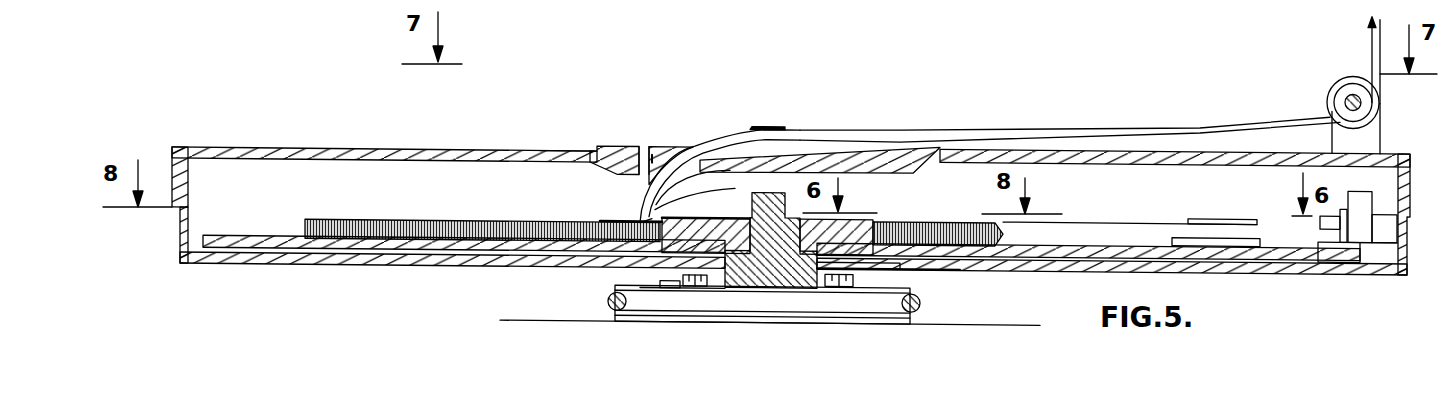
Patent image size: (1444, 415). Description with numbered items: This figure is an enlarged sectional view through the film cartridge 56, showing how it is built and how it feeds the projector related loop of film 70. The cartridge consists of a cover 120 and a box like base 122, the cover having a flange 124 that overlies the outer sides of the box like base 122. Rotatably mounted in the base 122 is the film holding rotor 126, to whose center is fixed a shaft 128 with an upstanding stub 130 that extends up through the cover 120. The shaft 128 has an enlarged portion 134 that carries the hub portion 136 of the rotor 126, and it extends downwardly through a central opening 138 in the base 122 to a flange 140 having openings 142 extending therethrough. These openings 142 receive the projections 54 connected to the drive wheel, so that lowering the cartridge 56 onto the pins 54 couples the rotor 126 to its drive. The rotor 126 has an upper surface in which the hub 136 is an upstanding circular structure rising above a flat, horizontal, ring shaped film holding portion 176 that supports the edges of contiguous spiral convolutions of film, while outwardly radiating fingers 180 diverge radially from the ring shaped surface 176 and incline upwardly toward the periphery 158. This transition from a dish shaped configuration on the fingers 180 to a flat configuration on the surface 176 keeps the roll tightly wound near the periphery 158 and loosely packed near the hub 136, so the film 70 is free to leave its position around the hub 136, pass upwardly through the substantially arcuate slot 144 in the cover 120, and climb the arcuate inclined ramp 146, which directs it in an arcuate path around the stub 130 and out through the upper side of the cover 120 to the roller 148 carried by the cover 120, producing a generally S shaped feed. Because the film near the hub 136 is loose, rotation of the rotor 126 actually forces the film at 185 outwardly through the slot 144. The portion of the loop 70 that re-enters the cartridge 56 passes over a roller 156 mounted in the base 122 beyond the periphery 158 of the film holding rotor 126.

The projections 54 is at (695, 288).
The film cartridge 56 is at (563, 147).
The projector related loop of film 70 is at (1120, 130).
The cover 120 is at (369, 147).
The box like base 122 is at (180, 235).
The flange 124 is at (172, 165).
The film holding rotor 126 is at (285, 237).
The shaft 128 is at (770, 266).
The upstanding stub 130 is at (770, 127).
The enlarged portion 134 is at (740, 218).
The hub portion 136 is at (878, 222).
The central opening 138 is at (853, 272).
The flange 140 is at (660, 283).
The openings 142 is at (820, 290).
The arcuate slot 144 is at (645, 142).
The arcuate inclined ramp 146 is at (845, 155).
The roller 148 is at (1330, 107).
The roller 156 is at (1337, 227).
The periphery 158 is at (1088, 270).
The ring shaped film holding portion 176 is at (597, 218).
The outwardly radiating fingers 180 is at (258, 233).
The film at 185 is at (657, 208).